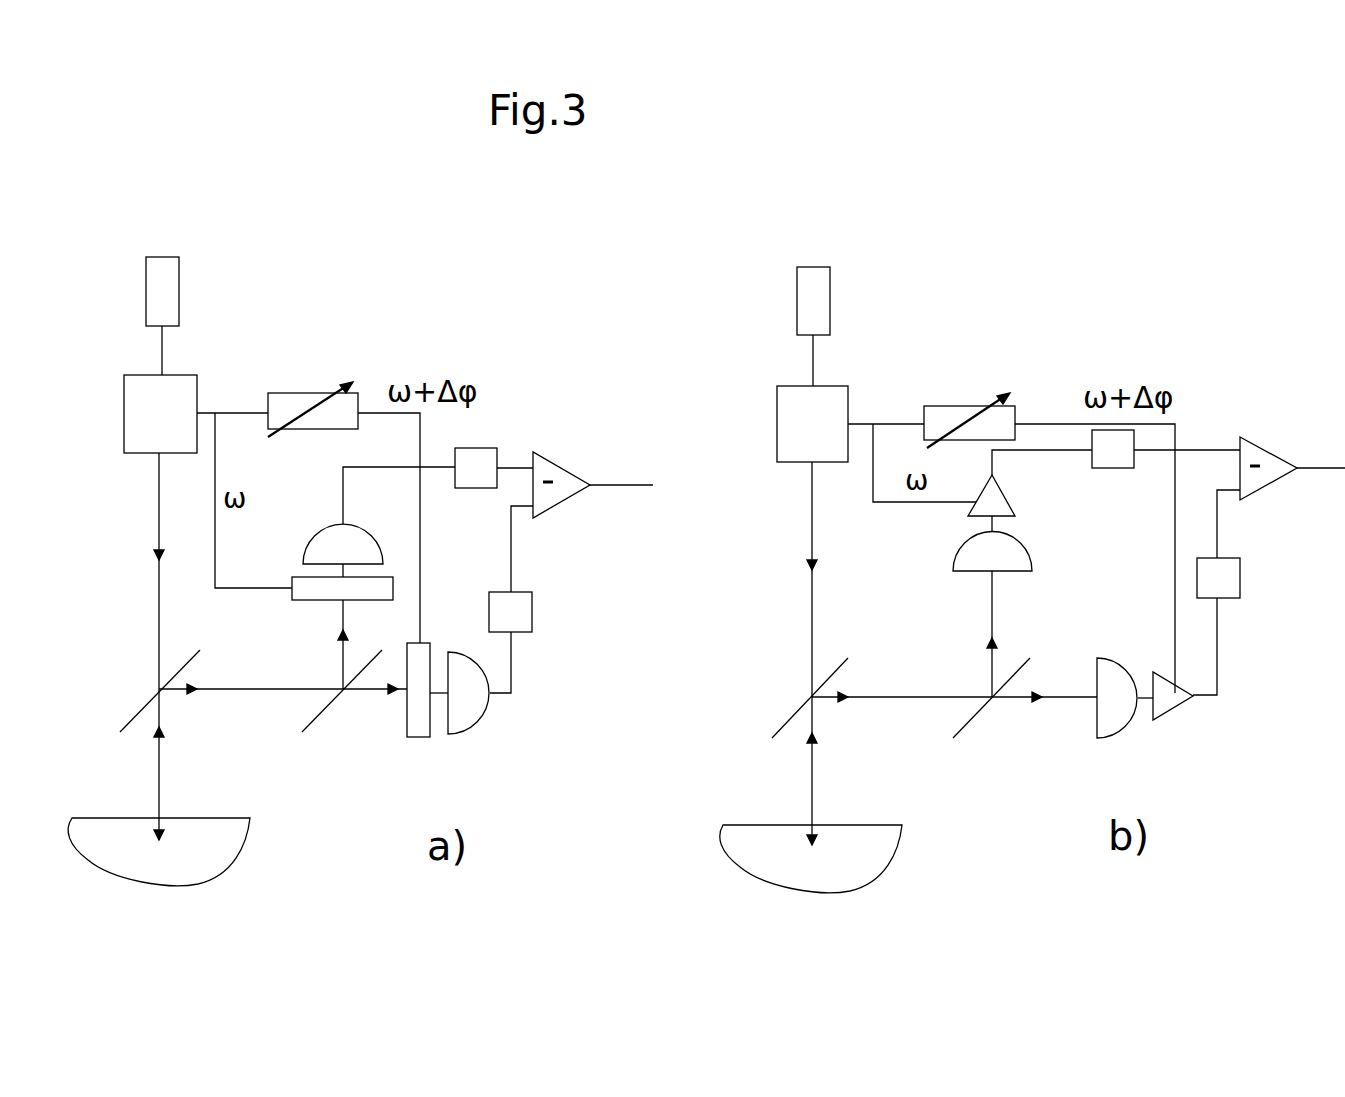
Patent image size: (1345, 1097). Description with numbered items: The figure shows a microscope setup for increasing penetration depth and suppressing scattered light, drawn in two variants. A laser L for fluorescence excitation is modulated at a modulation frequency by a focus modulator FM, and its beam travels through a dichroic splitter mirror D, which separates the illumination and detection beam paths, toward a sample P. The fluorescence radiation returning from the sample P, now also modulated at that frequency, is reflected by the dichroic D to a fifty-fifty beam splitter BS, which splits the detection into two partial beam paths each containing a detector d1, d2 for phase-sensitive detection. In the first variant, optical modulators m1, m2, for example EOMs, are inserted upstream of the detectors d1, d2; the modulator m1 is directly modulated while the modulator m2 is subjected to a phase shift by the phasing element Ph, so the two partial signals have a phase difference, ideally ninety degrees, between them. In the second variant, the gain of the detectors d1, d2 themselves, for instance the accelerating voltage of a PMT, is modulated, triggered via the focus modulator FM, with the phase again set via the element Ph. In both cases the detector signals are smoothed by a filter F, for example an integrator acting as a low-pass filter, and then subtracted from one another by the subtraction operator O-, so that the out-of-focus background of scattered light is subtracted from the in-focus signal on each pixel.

The laser beam L is at (469, 321).
The focus modulator FM is at (451, 418).
The element for phasing Ph is at (641, 398).
The detector d1 is at (671, 549).
The optical modulator m1 is at (332, 607).
The optical modulator m2 is at (420, 710).
The beam splitter BS is at (651, 716).
The dichroic splitter mirror D is at (474, 716).
The sample P is at (485, 855).
The filter F is at (847, 531).
The detector d2 is at (792, 716).
The subtraction operator O- is at (939, 452).